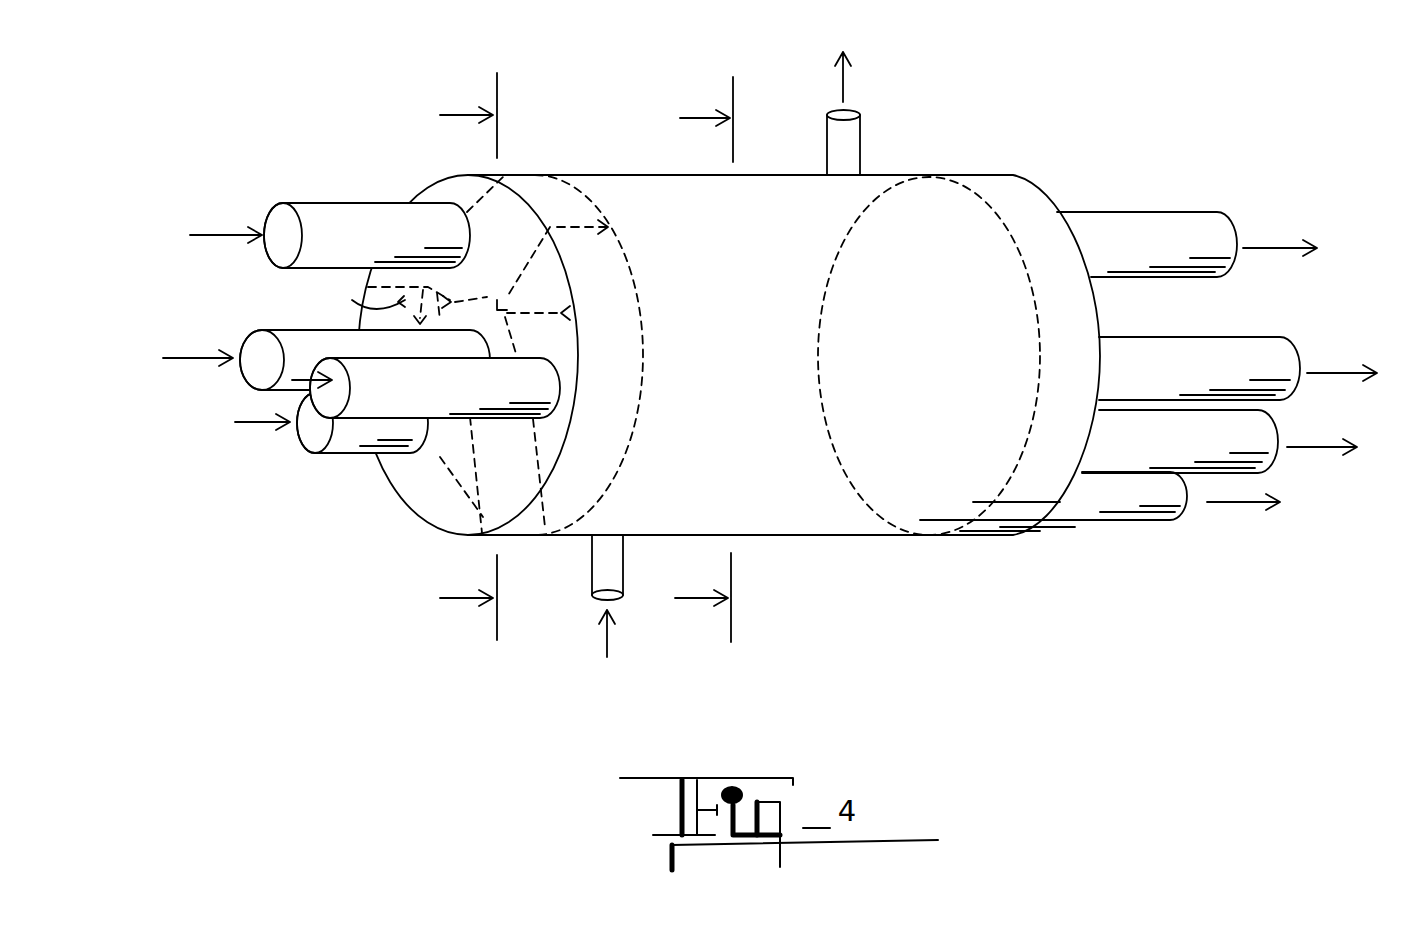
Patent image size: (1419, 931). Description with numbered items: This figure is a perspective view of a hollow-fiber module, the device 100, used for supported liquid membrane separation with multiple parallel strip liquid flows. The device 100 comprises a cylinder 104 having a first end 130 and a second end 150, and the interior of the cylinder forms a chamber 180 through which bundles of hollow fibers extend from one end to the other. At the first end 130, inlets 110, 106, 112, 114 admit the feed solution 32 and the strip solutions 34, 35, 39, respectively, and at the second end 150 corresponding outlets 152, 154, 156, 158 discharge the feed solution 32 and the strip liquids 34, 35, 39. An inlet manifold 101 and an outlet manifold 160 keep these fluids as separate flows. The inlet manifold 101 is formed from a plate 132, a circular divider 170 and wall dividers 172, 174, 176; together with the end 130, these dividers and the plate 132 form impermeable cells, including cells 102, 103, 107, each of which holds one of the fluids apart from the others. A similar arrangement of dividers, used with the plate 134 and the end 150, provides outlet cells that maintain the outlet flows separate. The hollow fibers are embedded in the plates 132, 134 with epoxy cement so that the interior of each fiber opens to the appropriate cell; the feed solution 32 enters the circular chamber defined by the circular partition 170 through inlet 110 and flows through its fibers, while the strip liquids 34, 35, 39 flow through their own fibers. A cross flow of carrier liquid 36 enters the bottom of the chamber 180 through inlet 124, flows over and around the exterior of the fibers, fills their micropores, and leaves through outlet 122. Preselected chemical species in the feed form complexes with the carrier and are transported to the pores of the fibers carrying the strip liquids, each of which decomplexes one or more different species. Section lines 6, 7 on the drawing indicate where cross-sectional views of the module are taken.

The device 100 is at (677, 314).
The impermeable cell 102 is at (546, 178).
The cylinder 104 is at (746, 248).
The inlet 106 is at (380, 203).
The inlet 110 is at (307, 328).
The inlet 112 is at (437, 422).
The inlet 114 is at (352, 447).
The outlet 122 is at (860, 140).
The inlet 124 is at (627, 565).
The first end 130 is at (478, 207).
The plate 132 is at (622, 462).
The plate 134 is at (998, 213).
The second end 150 is at (1100, 317).
The outlet 152 is at (1240, 337).
The outlet 154 is at (1147, 210).
The outlet 156 is at (1247, 408).
The outlet 158 is at (1113, 523).
The outlet manifold 160 is at (1028, 493).
The circular divider 170 is at (543, 337).
The wall divider 172 is at (595, 222).
The wall divider 174 is at (354, 301).
The wall divider 176 is at (525, 492).
The chamber 180 is at (803, 500).
The inlet manifold 101 is at (618, 281).
The impermeable cell 103 is at (610, 372).
The impermeable cell 107 is at (465, 315).
The feed solution 32 is at (203, 358).
The strip solution 34 is at (219, 236).
The strip solution 35 is at (303, 388).
The carrier liquid 36 is at (847, 90).
The strip solution 39 is at (260, 423).
The section line 6- 6 is at (718, 359).
The section line 7- 7 is at (481, 356).